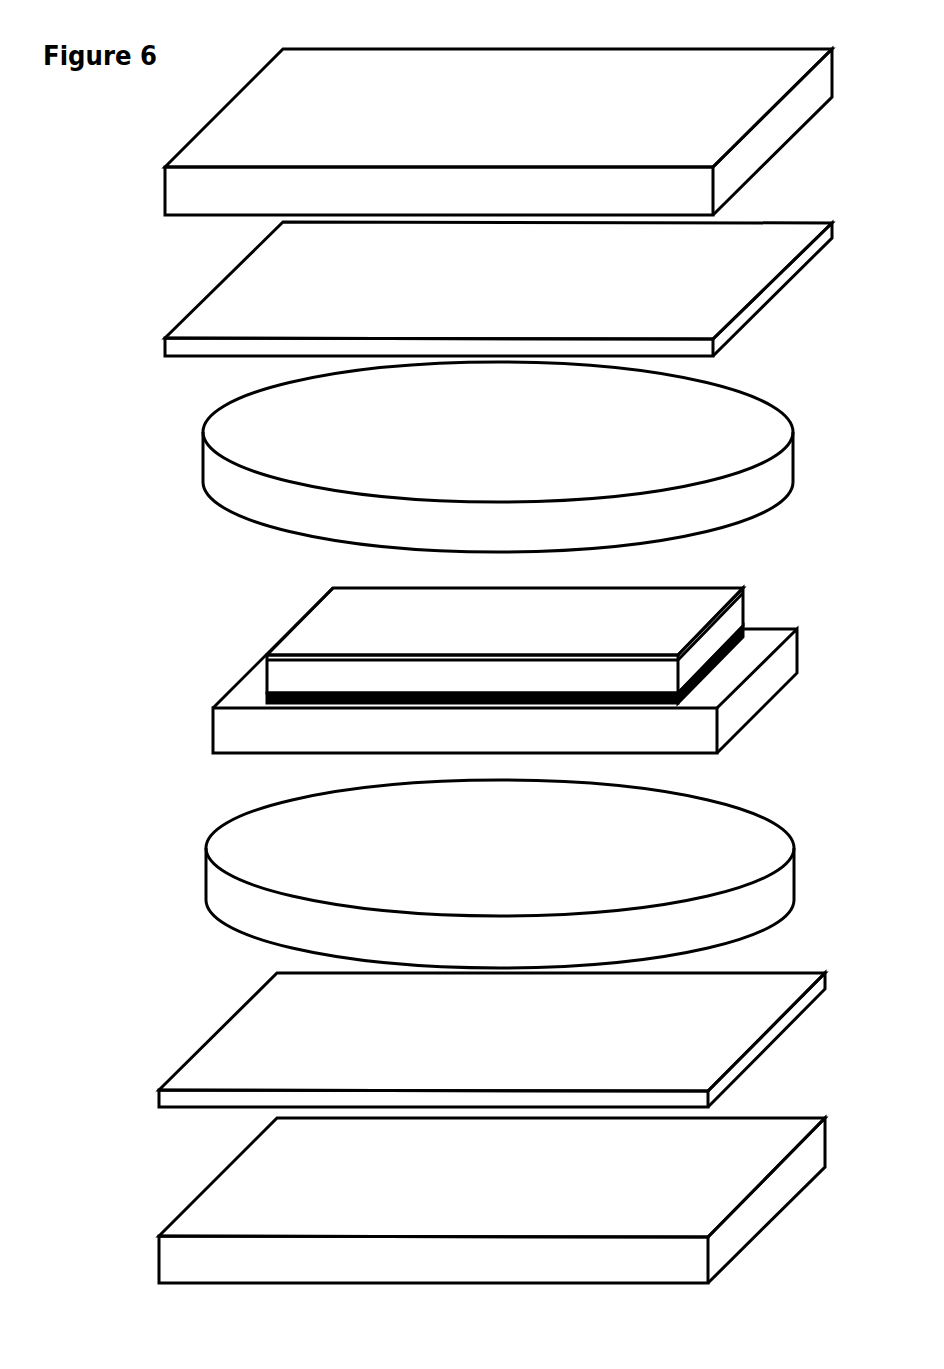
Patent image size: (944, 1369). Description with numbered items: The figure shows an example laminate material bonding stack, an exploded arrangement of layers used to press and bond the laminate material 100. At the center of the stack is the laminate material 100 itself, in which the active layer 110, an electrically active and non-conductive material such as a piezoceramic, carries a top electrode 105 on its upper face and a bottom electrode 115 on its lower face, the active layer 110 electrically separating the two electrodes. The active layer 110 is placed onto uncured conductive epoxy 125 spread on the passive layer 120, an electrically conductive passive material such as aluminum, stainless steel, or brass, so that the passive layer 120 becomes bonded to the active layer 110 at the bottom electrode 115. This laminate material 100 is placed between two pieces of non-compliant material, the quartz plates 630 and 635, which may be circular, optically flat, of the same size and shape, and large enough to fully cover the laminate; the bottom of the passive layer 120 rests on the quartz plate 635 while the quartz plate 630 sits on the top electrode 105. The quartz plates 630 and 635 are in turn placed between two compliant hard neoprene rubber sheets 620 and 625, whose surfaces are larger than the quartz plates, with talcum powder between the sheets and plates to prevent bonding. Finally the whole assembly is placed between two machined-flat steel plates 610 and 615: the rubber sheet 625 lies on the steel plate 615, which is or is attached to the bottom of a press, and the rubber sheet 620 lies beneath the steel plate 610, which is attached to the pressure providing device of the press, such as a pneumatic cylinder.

The steel plate 610 is at (197, 134).
The hard neoprene rubber sheet 620 is at (200, 307).
The quartz plate 630 is at (204, 421).
The laminate material 100 is at (306, 609).
The top electrode 105 is at (630, 652).
The active layer 110 is at (261, 670).
The bottom electrode 115 is at (616, 694).
The passive layer 120 is at (223, 698).
The conductive epoxy 125 is at (733, 653).
The quartz plate 635 is at (205, 847).
The hard neoprene rubber sheet 625 is at (192, 1053).
The steel plate 615 is at (193, 1202).